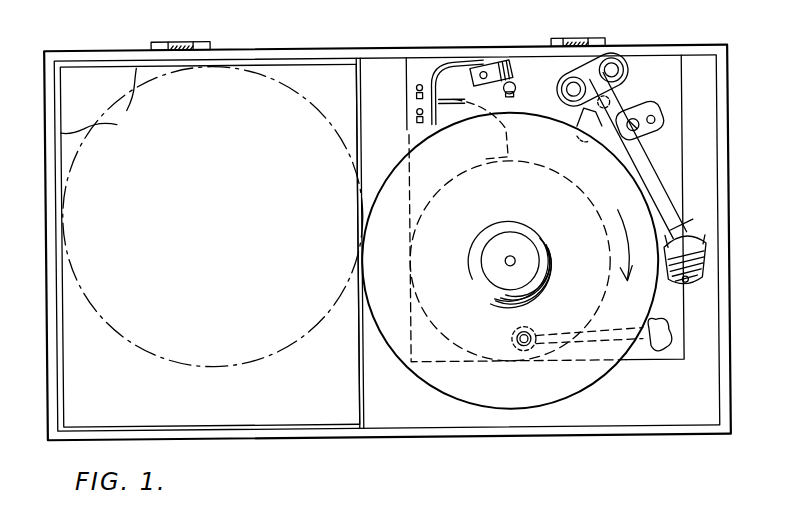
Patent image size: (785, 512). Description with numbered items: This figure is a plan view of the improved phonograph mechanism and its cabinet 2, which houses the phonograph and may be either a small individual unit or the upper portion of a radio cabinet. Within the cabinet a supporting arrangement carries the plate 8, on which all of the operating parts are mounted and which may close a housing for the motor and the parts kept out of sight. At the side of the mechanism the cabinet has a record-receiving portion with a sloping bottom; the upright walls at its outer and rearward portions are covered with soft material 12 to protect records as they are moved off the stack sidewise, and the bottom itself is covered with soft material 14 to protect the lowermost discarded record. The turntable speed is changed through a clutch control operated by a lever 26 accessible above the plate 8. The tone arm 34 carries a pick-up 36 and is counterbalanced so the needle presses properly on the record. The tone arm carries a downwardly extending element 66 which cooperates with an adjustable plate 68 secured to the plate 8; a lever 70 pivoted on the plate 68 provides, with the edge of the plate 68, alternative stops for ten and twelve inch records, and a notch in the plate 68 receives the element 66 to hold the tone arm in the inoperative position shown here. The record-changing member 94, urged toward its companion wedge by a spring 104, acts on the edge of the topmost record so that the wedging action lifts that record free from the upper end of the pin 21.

The cabinet 2 is at (380, 430).
The plate 8 is at (675, 362).
The soft material covering 12 is at (209, 245).
The soft material covering 14 is at (253, 397).
The pin 21 is at (512, 260).
The lever 26 is at (648, 347).
The tone arm 34 is at (656, 190).
The pick-up 36 is at (697, 242).
The downwardly extending element 66 is at (600, 132).
The plate 68 is at (628, 109).
The lever 70 is at (649, 126).
The member 94 is at (437, 98).
The spring 104 is at (516, 72).